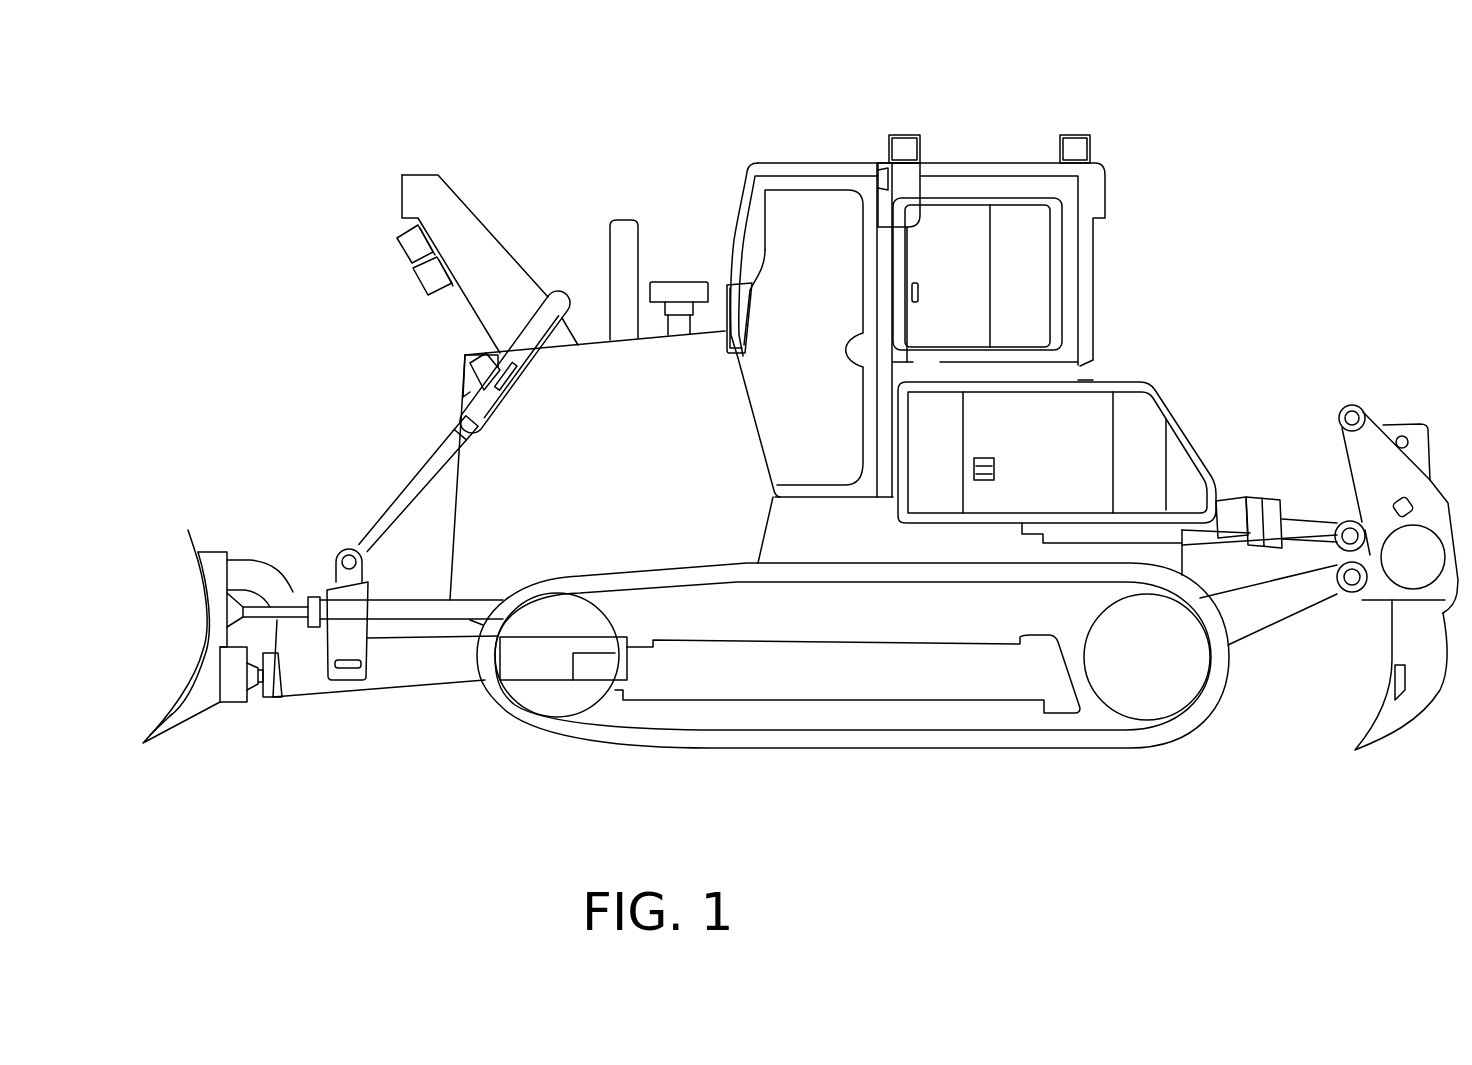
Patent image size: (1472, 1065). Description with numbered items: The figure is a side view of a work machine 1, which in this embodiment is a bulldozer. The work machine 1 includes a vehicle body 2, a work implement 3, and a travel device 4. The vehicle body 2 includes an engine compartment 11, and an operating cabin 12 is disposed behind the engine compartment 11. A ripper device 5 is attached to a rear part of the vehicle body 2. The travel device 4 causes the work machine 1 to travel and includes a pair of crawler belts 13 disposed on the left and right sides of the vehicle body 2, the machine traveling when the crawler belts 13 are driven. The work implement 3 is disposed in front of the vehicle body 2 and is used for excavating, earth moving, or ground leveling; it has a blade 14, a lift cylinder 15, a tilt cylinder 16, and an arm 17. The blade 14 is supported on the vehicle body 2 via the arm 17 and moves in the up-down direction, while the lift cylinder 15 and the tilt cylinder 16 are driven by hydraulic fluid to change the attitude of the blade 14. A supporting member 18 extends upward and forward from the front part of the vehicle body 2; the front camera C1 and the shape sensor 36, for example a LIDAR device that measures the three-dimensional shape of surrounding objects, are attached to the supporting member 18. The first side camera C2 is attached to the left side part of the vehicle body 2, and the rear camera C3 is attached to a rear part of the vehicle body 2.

The work machine 1 is at (1280, 120).
The vehicle body 2 is at (965, 148).
The work implement 3 is at (210, 505).
The travel device 4 is at (858, 767).
The ripper device 5 is at (1385, 398).
The engine compartment 11 is at (593, 377).
The operating cabin 12 is at (830, 163).
The crawler belt 13 is at (967, 748).
The blade 14 is at (203, 628).
The lift cylinder 15 is at (410, 472).
The tilt cylinder 16 is at (423, 613).
The arm 17 is at (397, 675).
The supporting member 18 is at (438, 197).
The shape sensor 36 is at (397, 243).
The front camera C1 is at (422, 282).
The first side camera C2 is at (905, 147).
The rear camera C3 is at (1087, 145).